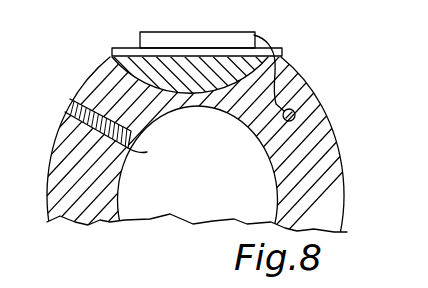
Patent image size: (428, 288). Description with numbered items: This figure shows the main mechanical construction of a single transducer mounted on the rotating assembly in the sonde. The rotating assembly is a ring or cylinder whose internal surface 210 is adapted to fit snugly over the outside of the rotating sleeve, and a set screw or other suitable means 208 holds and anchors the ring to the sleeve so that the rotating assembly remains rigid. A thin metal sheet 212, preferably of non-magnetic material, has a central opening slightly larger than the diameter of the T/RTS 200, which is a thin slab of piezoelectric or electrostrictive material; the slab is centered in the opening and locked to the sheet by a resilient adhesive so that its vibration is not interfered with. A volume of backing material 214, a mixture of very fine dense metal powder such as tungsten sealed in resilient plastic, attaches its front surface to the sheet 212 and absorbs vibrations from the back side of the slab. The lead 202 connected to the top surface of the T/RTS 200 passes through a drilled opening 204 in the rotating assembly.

The T/RTS 200 is at (221, 38).
The lead 202 is at (282, 70).
The drilled opening 204 is at (296, 114).
The set screw 208 is at (324, 167).
The internal surface 210 is at (277, 177).
The thin metal sheet 212 is at (124, 49).
The backing material 214 is at (187, 90).